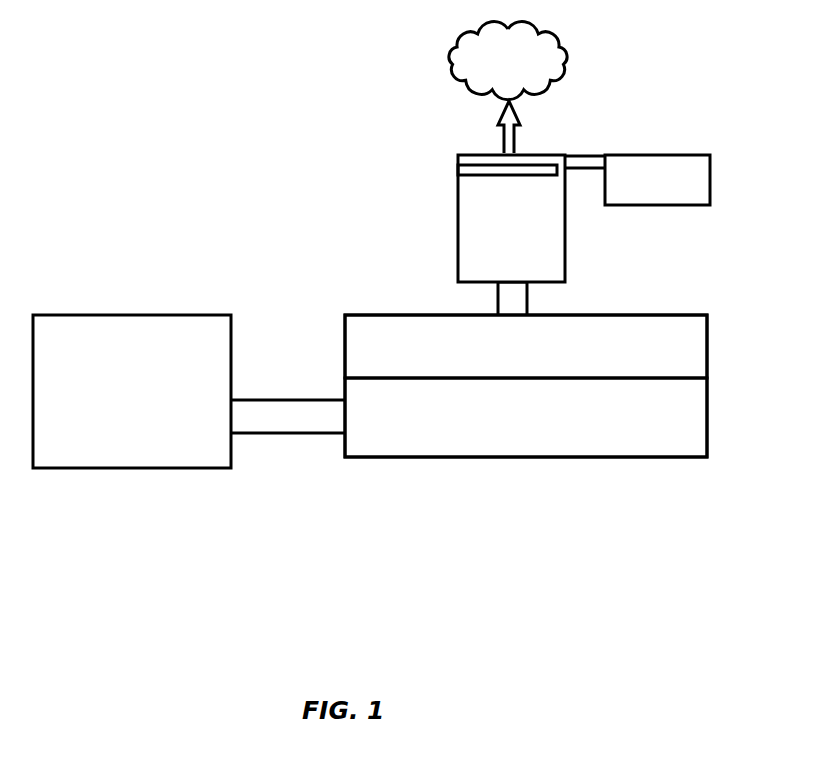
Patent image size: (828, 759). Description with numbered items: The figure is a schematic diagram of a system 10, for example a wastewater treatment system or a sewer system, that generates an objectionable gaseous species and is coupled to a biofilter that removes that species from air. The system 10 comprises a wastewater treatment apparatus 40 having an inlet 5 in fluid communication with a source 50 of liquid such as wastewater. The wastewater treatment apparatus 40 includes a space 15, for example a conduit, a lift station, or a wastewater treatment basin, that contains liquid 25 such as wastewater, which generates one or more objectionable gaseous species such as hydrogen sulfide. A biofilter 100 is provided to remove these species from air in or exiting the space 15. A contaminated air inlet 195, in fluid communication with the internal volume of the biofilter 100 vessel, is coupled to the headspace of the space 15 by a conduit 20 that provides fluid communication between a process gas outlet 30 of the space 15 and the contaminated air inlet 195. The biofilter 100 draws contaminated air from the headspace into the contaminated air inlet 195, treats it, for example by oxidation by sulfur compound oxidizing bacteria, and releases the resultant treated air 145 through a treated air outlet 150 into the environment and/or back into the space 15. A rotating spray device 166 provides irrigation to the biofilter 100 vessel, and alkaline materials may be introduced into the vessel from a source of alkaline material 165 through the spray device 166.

The inlet 5 is at (308, 437).
The system 10 is at (248, 160).
The space 15 is at (374, 364).
The conduit 20 is at (503, 311).
The liquid 25 is at (459, 429).
The process gas outlet 30 is at (520, 318).
The wastewater treatment apparatus 40 is at (345, 315).
The source of liquid 50 is at (104, 401).
The biofilter 100 is at (482, 216).
The treated air 145 is at (484, 69).
The treated air outlet 150 is at (520, 150).
The source of alkaline material 165 is at (634, 190).
The rotating spray device 166 is at (458, 170).
The contaminated air inlet 195 is at (537, 285).